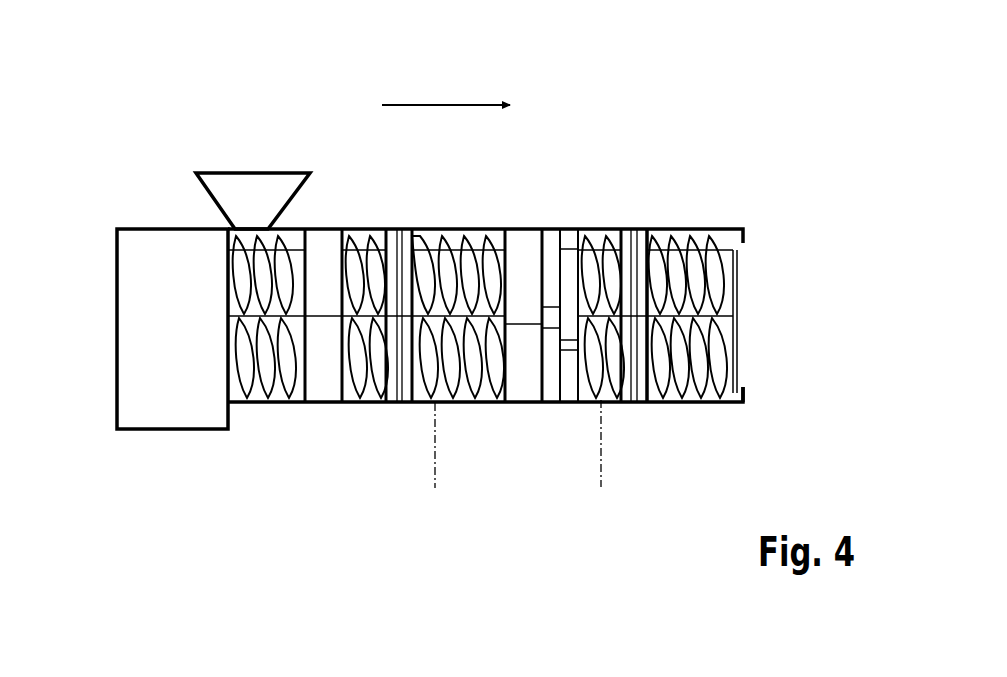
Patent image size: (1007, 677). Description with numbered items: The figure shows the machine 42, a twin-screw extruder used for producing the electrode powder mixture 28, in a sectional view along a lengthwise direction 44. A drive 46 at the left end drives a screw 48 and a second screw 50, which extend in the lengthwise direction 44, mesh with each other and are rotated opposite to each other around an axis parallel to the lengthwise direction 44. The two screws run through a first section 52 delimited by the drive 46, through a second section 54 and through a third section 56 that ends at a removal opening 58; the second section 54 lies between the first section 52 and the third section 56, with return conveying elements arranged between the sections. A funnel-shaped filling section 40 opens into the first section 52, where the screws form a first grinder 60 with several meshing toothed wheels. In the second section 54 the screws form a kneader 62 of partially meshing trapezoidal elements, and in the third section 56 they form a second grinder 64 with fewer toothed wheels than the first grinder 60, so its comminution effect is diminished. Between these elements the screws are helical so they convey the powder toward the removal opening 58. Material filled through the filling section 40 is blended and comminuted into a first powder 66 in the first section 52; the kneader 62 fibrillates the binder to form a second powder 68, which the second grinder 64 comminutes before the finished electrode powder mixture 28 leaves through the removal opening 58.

The electrode powder mixture 28 is at (743, 393).
The filling section 40 is at (252, 171).
The machine 42 is at (620, 108).
The lengthwise direction 44 is at (449, 104).
The drive 46 is at (128, 323).
The screw 48 is at (283, 403).
The second screw 50 is at (707, 228).
The first section 52 is at (392, 427).
The second section 54 is at (540, 427).
The third section 56 is at (663, 427).
The removal opening 58 is at (766, 288).
The first grinder 60 is at (323, 237).
The kneader 62 is at (537, 203).
The second grinder 64 is at (639, 203).
The first powder 66 is at (358, 403).
The second powder 68 is at (595, 402).